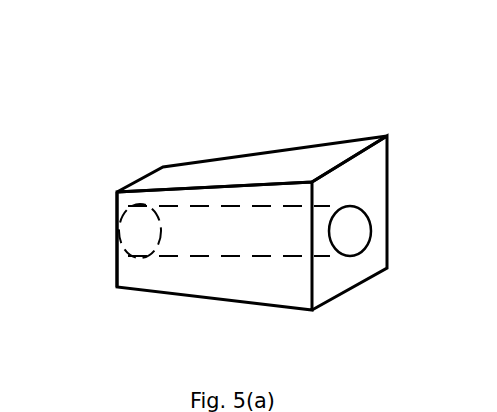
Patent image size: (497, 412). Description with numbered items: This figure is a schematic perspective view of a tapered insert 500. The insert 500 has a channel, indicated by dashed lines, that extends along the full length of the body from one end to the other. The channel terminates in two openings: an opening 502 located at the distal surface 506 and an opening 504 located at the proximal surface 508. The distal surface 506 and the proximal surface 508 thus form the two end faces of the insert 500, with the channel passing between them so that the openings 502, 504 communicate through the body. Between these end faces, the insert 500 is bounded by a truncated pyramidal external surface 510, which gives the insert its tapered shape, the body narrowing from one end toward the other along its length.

The insert 500 is at (243, 135).
The opening 502 is at (346, 228).
The opening 504 is at (92, 227).
The distal surface 506 is at (375, 177).
The proximal surface 508 is at (116, 268).
The truncated pyramidal external surface 510 is at (220, 285).